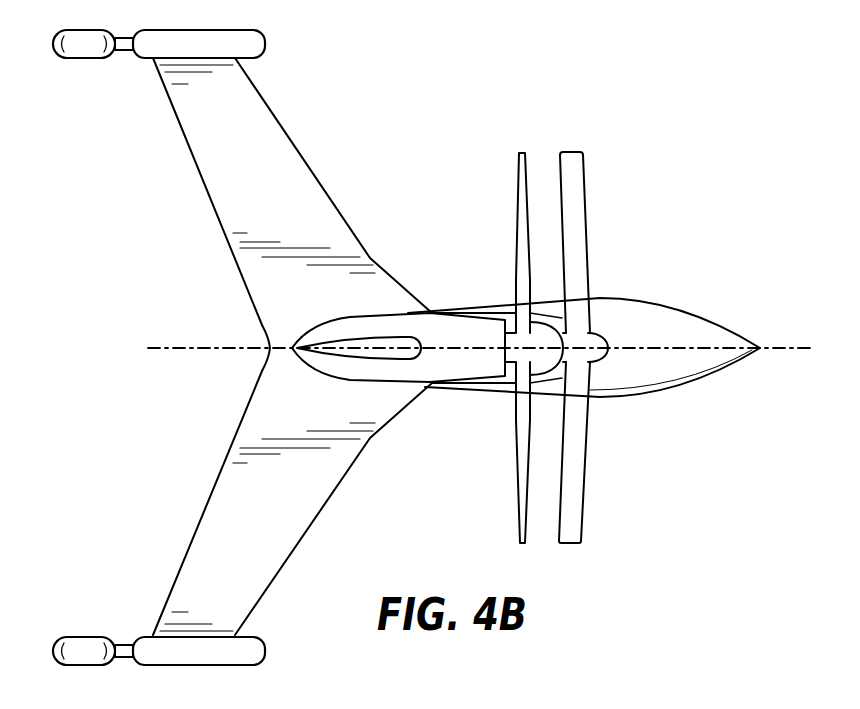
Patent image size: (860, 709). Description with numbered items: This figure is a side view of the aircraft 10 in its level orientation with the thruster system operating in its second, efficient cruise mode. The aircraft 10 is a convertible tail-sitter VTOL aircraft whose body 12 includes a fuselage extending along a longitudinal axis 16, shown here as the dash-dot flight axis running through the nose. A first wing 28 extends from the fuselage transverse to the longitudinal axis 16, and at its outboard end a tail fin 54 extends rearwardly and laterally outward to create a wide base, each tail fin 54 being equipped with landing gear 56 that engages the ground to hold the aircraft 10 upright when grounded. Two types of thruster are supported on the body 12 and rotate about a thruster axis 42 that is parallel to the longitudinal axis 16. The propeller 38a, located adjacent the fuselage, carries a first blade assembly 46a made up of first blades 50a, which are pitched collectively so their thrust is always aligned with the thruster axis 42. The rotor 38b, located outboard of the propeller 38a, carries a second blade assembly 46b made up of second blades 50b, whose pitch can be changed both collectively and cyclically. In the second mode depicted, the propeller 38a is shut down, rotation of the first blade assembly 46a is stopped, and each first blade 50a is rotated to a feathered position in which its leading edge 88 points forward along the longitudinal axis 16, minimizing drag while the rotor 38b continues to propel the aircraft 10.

The aircraft 10 is at (715, 156).
The body 12 is at (637, 312).
The longitudinal axis 16 is at (168, 350).
The first wing 28 is at (346, 343).
The propeller 38a is at (592, 355).
The rotor 38b is at (410, 328).
The thruster axis 42 is at (225, 350).
The first blade assembly 46a is at (577, 258).
The second blade assembly 46b is at (516, 218).
The first blade 50a is at (570, 497).
The second blade 50b is at (522, 497).
The tail fin 54 is at (248, 120).
The landing gear 56 is at (83, 52).
The leading edge 88 is at (582, 172).